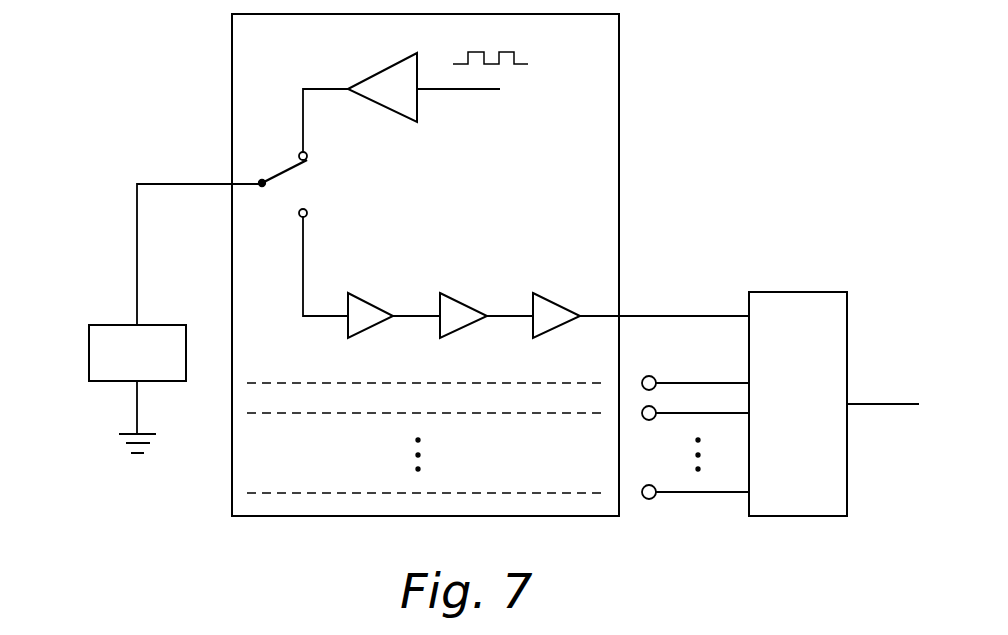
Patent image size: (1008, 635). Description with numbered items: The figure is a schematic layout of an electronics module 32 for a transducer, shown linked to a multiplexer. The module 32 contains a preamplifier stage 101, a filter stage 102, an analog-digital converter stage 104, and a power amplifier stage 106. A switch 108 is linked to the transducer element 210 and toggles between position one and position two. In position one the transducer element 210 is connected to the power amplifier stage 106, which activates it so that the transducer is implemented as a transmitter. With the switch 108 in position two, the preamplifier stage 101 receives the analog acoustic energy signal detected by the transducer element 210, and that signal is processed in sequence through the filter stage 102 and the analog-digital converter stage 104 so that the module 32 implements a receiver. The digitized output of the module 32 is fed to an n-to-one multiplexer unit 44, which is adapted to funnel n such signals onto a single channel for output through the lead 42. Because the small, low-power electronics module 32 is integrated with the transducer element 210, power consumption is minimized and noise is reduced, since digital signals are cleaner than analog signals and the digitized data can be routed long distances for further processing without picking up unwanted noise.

The electronics module 32 is at (683, 65).
The power amplifier stage 106 is at (393, 65).
The switch 108 is at (293, 167).
The preamplifier stage 101 is at (368, 297).
The filter stage 102 is at (458, 297).
The analog-digital converter (ADC) stage 104 is at (552, 300).
The n-to-1 multiplexer (MUX) unit 44 is at (802, 290).
The lead 42 is at (881, 403).
The transducer element 210 is at (89, 353).